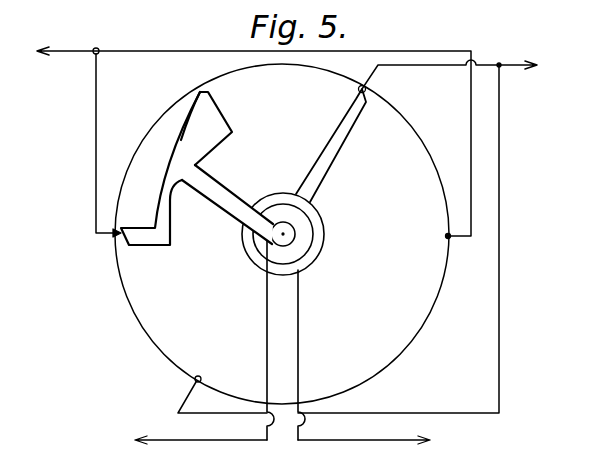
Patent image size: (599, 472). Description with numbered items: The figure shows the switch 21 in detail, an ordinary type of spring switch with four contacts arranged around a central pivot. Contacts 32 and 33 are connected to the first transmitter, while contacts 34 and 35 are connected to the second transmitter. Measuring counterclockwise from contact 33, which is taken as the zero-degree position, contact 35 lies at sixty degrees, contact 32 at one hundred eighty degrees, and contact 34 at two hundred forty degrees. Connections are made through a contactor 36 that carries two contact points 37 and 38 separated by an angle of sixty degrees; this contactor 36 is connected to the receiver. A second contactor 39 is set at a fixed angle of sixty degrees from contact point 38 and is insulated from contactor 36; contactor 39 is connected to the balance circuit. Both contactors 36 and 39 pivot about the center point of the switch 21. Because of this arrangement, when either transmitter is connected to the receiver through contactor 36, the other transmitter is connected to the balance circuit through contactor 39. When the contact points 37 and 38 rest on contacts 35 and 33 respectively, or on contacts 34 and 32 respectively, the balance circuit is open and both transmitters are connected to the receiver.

The switch 21 is at (396, 362).
The contact 32 is at (115, 241).
The contact 33 is at (445, 237).
The contact 34 is at (201, 376).
The contact 35 is at (368, 90).
The contactor 36 is at (232, 192).
The contact point 37 is at (142, 224).
The contact point 38 is at (217, 106).
The contactor 39 is at (333, 156).